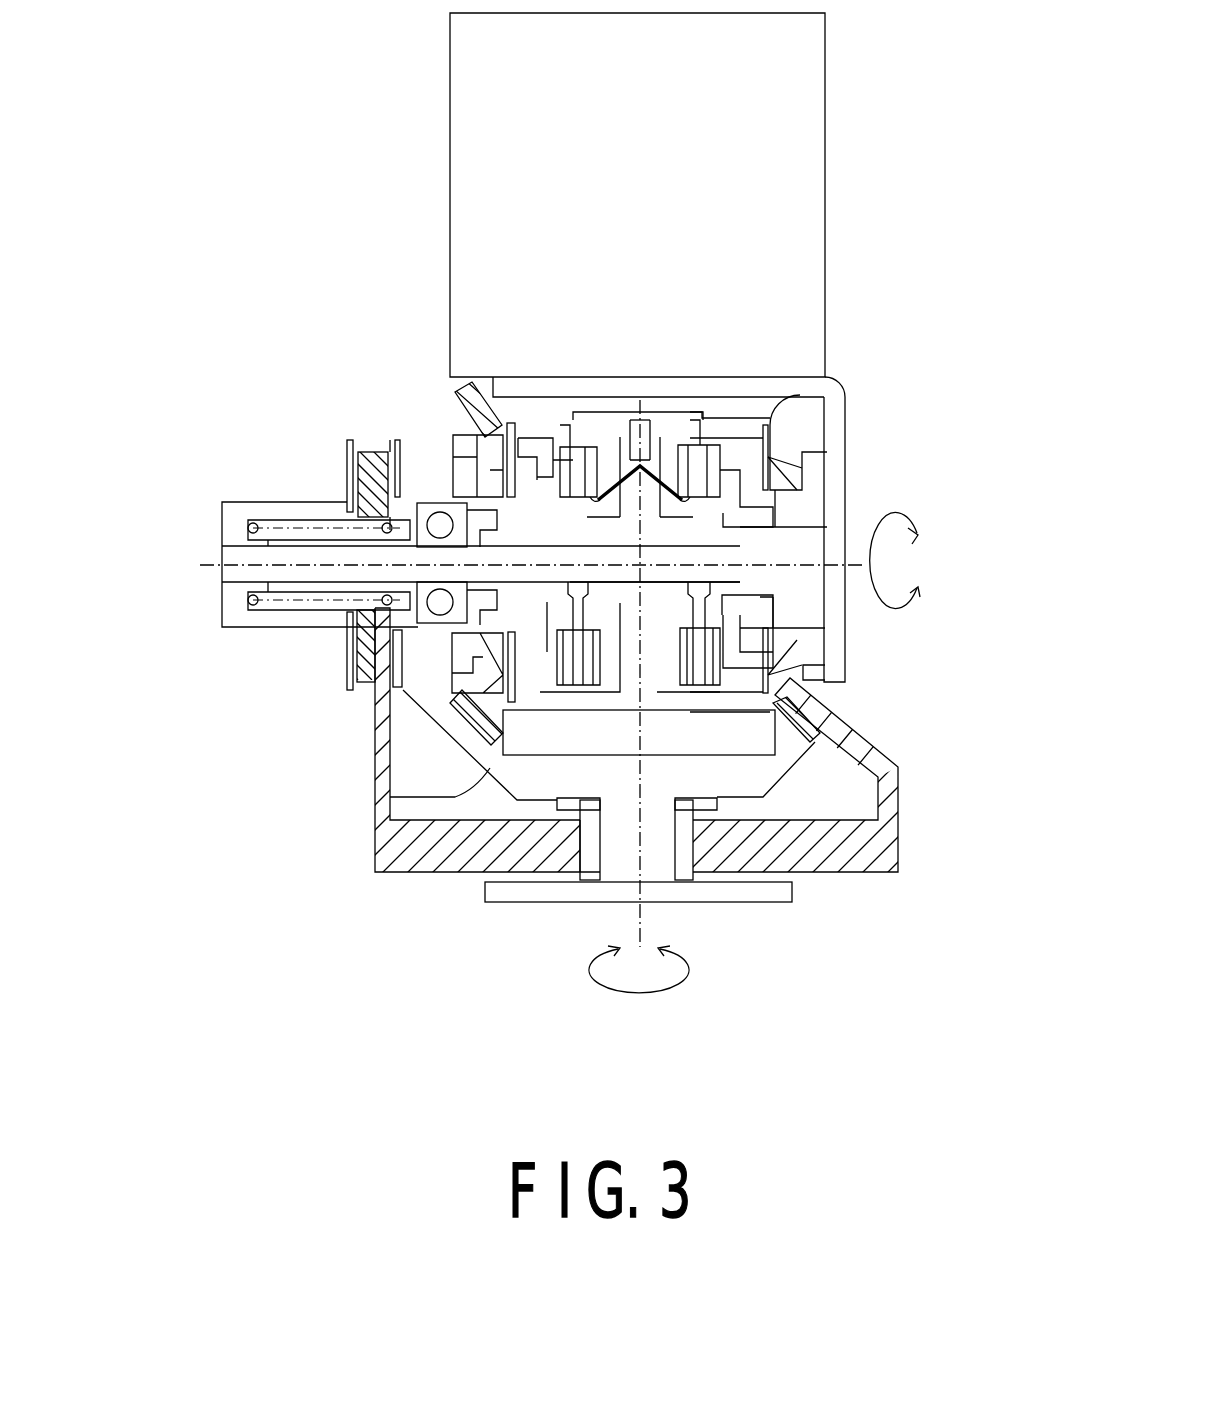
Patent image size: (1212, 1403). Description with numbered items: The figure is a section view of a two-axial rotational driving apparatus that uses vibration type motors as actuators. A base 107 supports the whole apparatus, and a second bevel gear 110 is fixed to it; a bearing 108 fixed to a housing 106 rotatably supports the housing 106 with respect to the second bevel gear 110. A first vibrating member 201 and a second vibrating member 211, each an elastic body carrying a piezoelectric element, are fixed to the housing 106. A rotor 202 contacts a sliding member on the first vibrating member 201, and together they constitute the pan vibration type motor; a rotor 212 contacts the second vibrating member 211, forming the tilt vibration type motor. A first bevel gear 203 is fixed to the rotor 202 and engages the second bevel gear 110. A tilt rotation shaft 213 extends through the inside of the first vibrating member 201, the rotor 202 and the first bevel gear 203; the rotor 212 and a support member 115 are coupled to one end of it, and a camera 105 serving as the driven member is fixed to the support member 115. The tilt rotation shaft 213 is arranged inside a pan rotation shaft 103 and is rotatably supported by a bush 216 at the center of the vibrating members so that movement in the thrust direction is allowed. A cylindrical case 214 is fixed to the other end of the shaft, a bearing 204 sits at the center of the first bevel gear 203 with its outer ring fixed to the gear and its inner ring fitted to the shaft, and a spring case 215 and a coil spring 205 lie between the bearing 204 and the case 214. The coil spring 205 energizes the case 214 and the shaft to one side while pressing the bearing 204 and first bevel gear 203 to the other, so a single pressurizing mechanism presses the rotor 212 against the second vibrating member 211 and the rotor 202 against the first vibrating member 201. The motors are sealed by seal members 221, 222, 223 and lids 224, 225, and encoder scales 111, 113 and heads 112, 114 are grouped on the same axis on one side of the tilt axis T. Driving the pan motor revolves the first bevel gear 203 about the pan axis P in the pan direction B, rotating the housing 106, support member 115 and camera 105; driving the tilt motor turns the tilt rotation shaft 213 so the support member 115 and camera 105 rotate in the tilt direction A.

The pan rotation shaft 103 is at (487, 500).
The camera 105 is at (800, 158).
The housing 106 is at (887, 838).
The base 107 is at (780, 895).
The bearing 108 is at (590, 846).
The second bevel gear 110 is at (478, 718).
The encoder scale 111 is at (397, 443).
The encoder head 112 is at (343, 463).
The encoder scale 113 is at (367, 657).
The encoder head 114 is at (347, 662).
The support member 115 is at (837, 498).
The first vibrating member 201 is at (562, 458).
The rotor 202 is at (533, 467).
The first bevel gear 203 is at (490, 637).
The bearing 204 is at (385, 683).
The coil spring 205 is at (250, 532).
The second vibrating member 211 is at (703, 453).
The rotor 212 is at (747, 463).
The tilt rotation shaft 213 is at (807, 585).
The cylindrical case 214 is at (228, 600).
The spring case 215 is at (255, 548).
The bush 216 is at (658, 592).
The seal member 221 is at (467, 477).
The seal member 222 is at (815, 473).
The seal member 223 is at (440, 603).
The lid 224 is at (510, 670).
The lid 225 is at (795, 637).
The tilt axis T is at (793, 555).
The tilt rotation direction A is at (913, 517).
The pan axis P is at (640, 865).
The pan rotation direction B is at (640, 993).